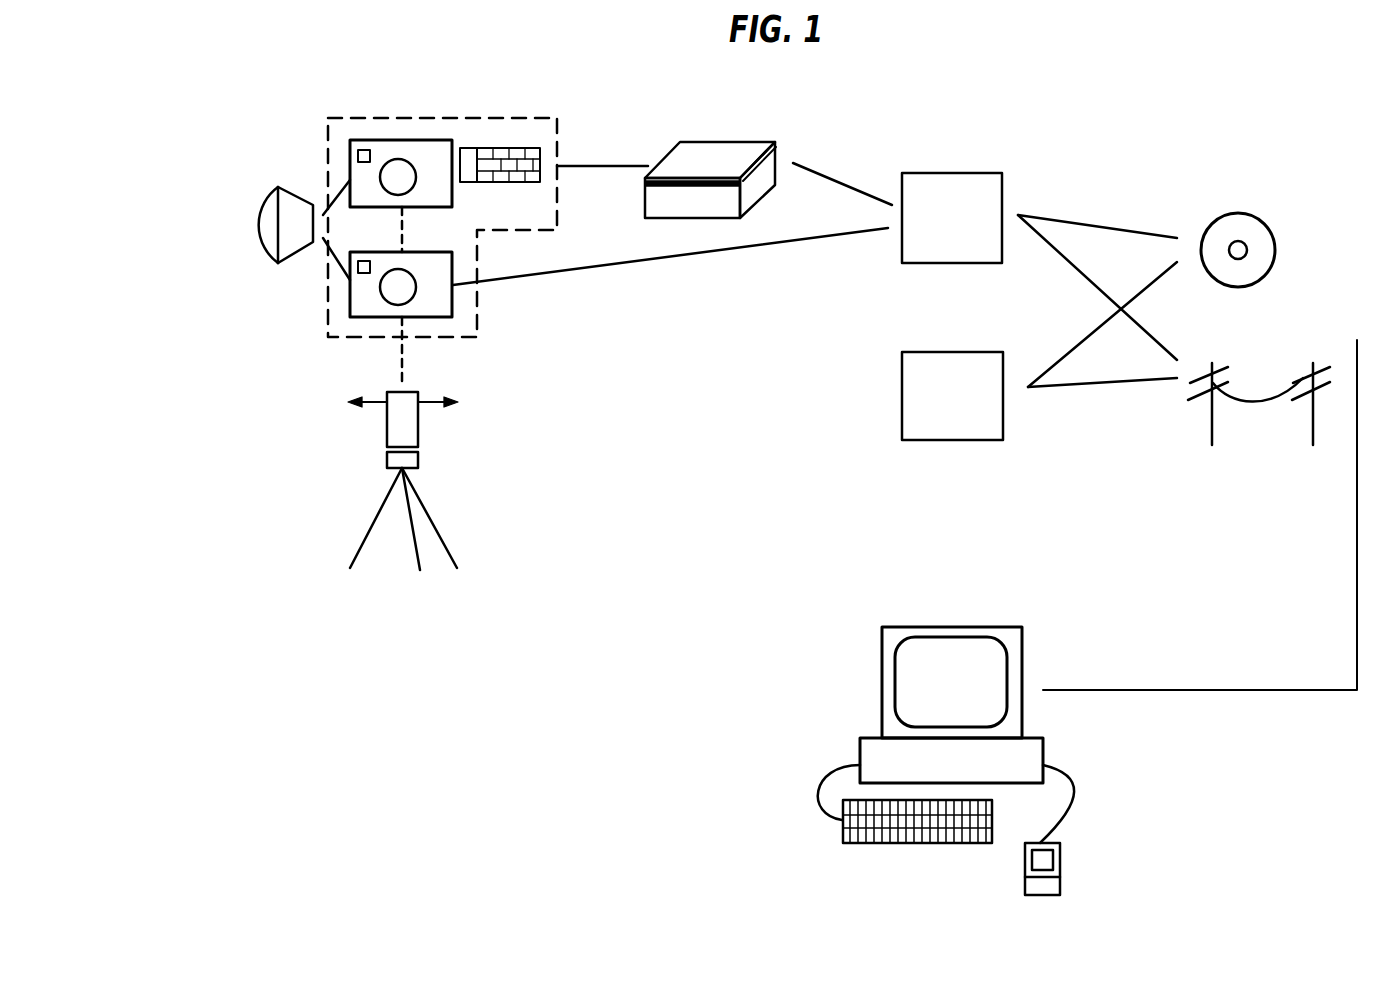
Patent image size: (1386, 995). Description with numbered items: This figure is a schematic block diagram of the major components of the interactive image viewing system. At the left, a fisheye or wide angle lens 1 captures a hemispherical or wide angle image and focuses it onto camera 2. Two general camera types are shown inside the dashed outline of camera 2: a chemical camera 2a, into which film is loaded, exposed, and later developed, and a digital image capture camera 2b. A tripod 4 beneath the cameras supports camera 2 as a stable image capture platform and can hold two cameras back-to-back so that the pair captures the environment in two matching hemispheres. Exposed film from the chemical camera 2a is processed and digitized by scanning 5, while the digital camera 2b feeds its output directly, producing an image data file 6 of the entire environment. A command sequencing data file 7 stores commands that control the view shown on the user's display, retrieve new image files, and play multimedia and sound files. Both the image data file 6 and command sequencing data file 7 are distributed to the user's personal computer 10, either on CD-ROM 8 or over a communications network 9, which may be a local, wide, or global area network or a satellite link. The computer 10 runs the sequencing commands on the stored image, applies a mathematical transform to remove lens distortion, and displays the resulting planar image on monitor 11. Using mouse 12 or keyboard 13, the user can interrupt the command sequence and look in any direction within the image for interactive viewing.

The fisheye lens 1 is at (256, 202).
The camera 2 is at (327, 313).
The chemical camera 2a is at (425, 140).
The digital image capture camera 2b is at (453, 290).
The tripod 4 is at (430, 422).
The scanning 5 is at (697, 143).
The image data file 6 is at (950, 265).
The command sequencing data file 7 is at (952, 350).
The CD-ROM 8 is at (1273, 238).
The communications network 9 is at (1252, 455).
The personal computer 10 is at (1078, 785).
The monitor 11 is at (1040, 725).
The mouse 12 is at (1060, 873).
The keyboard 13 is at (903, 843).